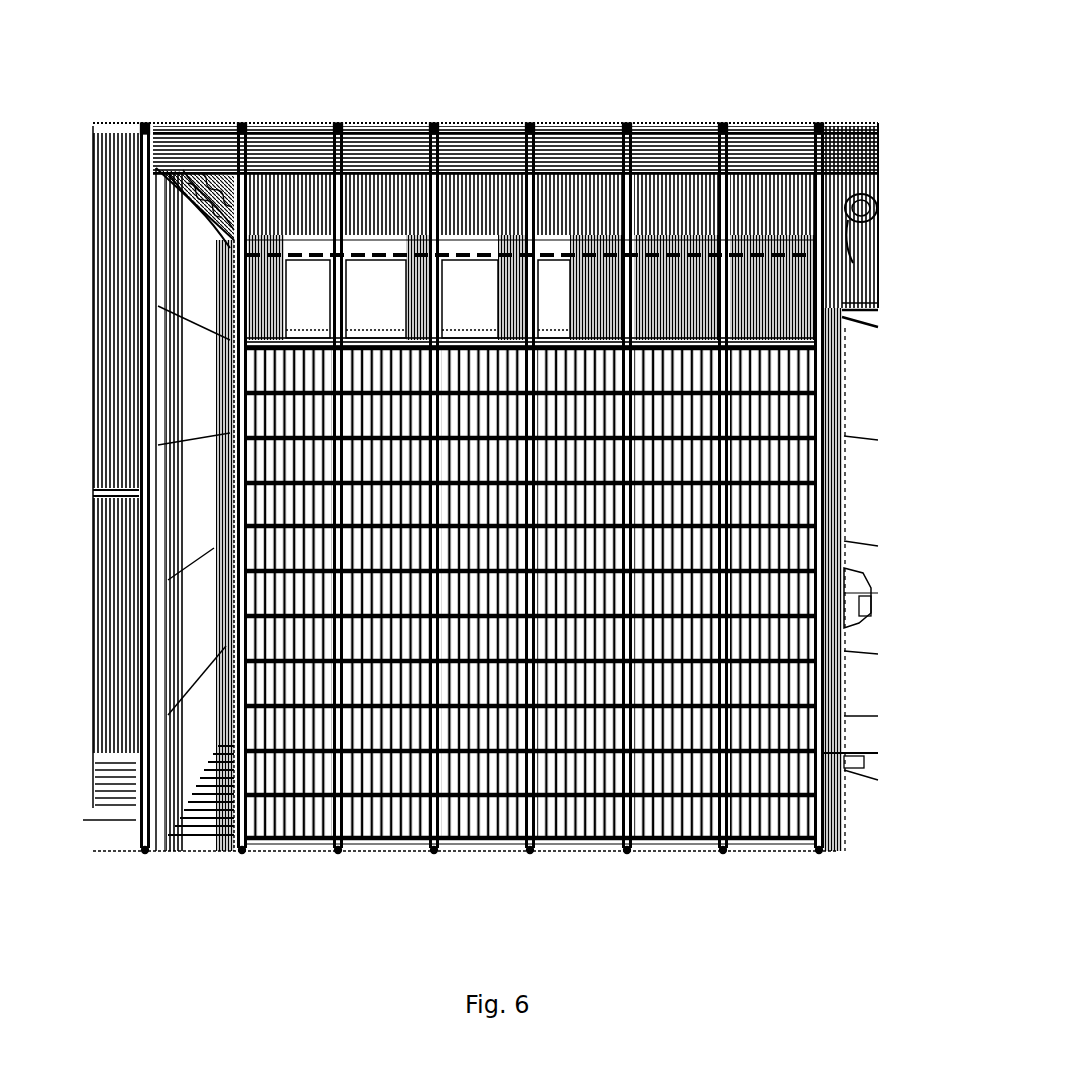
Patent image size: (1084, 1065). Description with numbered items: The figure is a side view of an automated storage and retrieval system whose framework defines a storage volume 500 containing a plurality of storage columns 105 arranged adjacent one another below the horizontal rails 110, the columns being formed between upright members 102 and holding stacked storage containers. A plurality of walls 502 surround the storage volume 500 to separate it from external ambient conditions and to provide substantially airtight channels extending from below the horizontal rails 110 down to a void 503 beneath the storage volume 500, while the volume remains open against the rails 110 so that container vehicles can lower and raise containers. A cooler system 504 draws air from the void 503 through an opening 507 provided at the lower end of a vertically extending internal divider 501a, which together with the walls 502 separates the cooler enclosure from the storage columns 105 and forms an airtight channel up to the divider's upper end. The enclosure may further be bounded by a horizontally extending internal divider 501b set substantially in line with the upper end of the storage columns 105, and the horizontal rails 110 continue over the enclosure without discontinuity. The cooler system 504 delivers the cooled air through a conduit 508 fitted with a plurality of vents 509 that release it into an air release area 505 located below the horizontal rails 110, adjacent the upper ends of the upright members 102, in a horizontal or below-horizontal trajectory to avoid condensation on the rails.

The storage volume 500 is at (452, 104).
The vents 509 is at (206, 194).
The air release area 505 is at (613, 122).
The horizontal rails 110 is at (846, 117).
The conduit 508 is at (872, 243).
The horizontally extending internal dividers 501b is at (852, 314).
The cooler system 504 is at (860, 680).
The vertically extending internal dividers 501a is at (841, 806).
The opening 507 is at (812, 848).
The storage columns 105 is at (665, 768).
The void 503 is at (571, 838).
The upright members 102 is at (80, 767).
The walls 502 is at (156, 792).